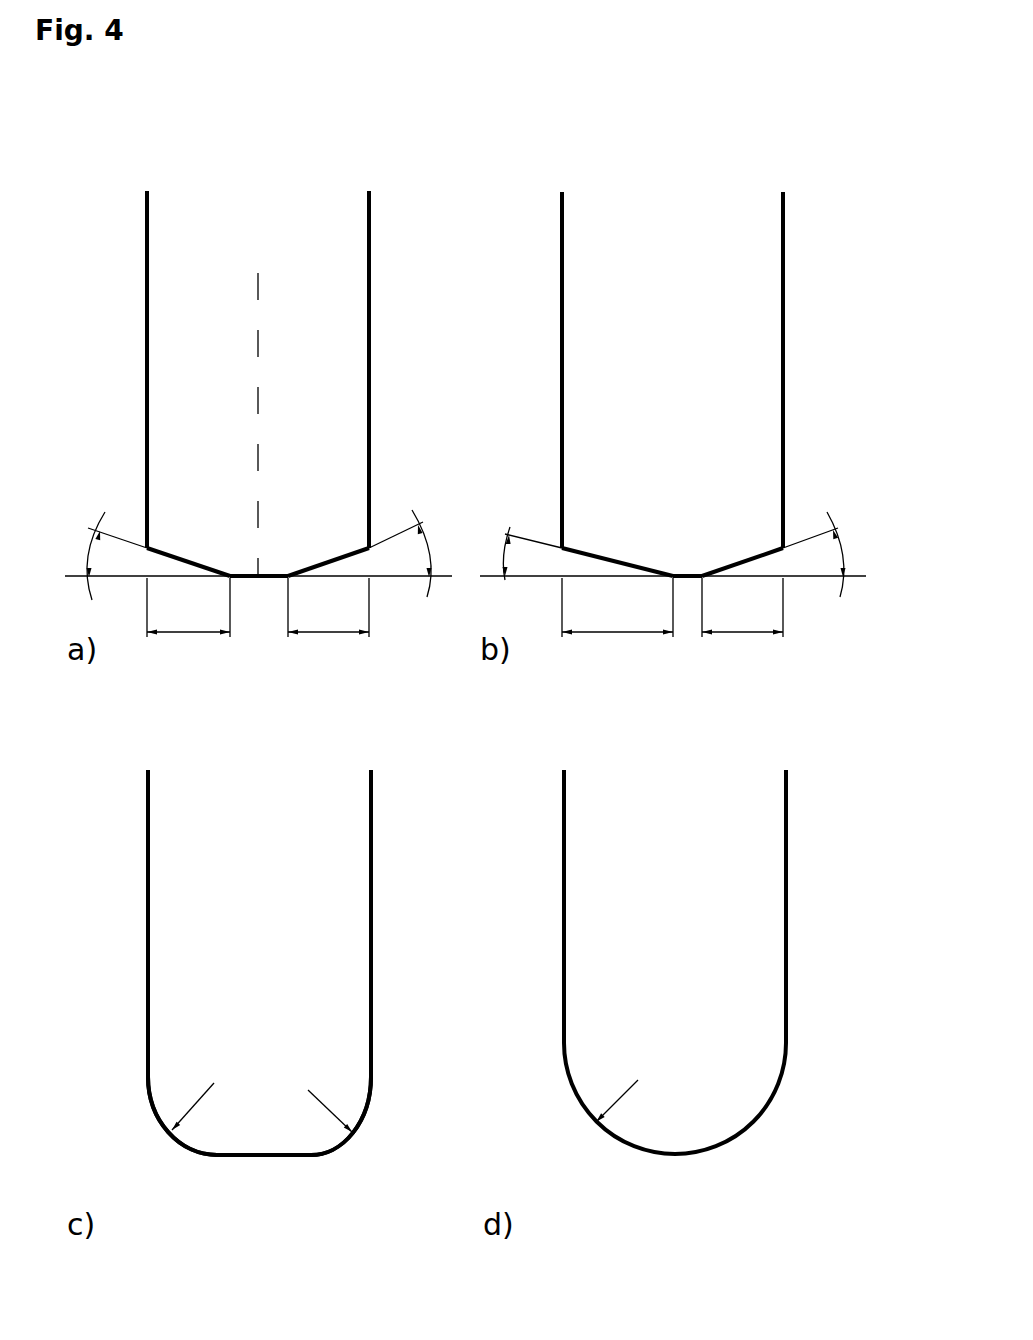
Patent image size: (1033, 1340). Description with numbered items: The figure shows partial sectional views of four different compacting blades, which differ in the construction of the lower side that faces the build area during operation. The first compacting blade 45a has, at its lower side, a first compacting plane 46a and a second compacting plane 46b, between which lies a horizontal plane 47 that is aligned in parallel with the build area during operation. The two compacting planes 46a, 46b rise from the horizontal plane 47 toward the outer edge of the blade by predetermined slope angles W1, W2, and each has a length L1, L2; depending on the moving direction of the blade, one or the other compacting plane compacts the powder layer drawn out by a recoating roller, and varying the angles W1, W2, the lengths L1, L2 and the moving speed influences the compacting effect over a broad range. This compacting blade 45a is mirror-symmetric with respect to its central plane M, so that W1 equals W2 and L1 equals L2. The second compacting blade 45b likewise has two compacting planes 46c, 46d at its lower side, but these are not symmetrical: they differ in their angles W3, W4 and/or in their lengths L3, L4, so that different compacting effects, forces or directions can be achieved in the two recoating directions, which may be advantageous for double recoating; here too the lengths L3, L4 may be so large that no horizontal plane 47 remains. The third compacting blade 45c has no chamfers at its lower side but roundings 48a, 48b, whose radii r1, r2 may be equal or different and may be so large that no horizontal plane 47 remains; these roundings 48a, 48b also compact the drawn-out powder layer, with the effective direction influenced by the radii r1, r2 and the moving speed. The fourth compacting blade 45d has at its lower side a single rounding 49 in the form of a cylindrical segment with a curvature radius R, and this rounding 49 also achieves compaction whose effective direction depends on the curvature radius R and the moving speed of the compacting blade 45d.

The compacting blade 45a is at (258, 414).
The compacting blade 45b is at (676, 414).
The compacting blade 45c is at (233, 830).
The compacting blade 45d is at (648, 830).
The first compacting plane 46a is at (168, 553).
The second compacting plane 46b is at (315, 567).
The compacting plane 46c is at (583, 553).
The compacting plane 46d is at (737, 562).
The horizontal plane 47 is at (250, 574).
The rounding 48a is at (170, 1120).
The rounding 48b is at (365, 1117).
The rounding 49 is at (765, 1112).
The central plane M is at (258, 388).
The slope angle W1 is at (104, 556).
The slope angle W2 is at (411, 553).
The angle W3 is at (521, 553).
The angle W4 is at (827, 554).
The length L1 is at (188, 622).
The length L2 is at (328, 622).
The length L3 is at (617, 622).
The length L4 is at (742, 622).
The radius r1 is at (194, 1100).
The radius r2 is at (329, 1103).
The curvature radius R is at (618, 1093).